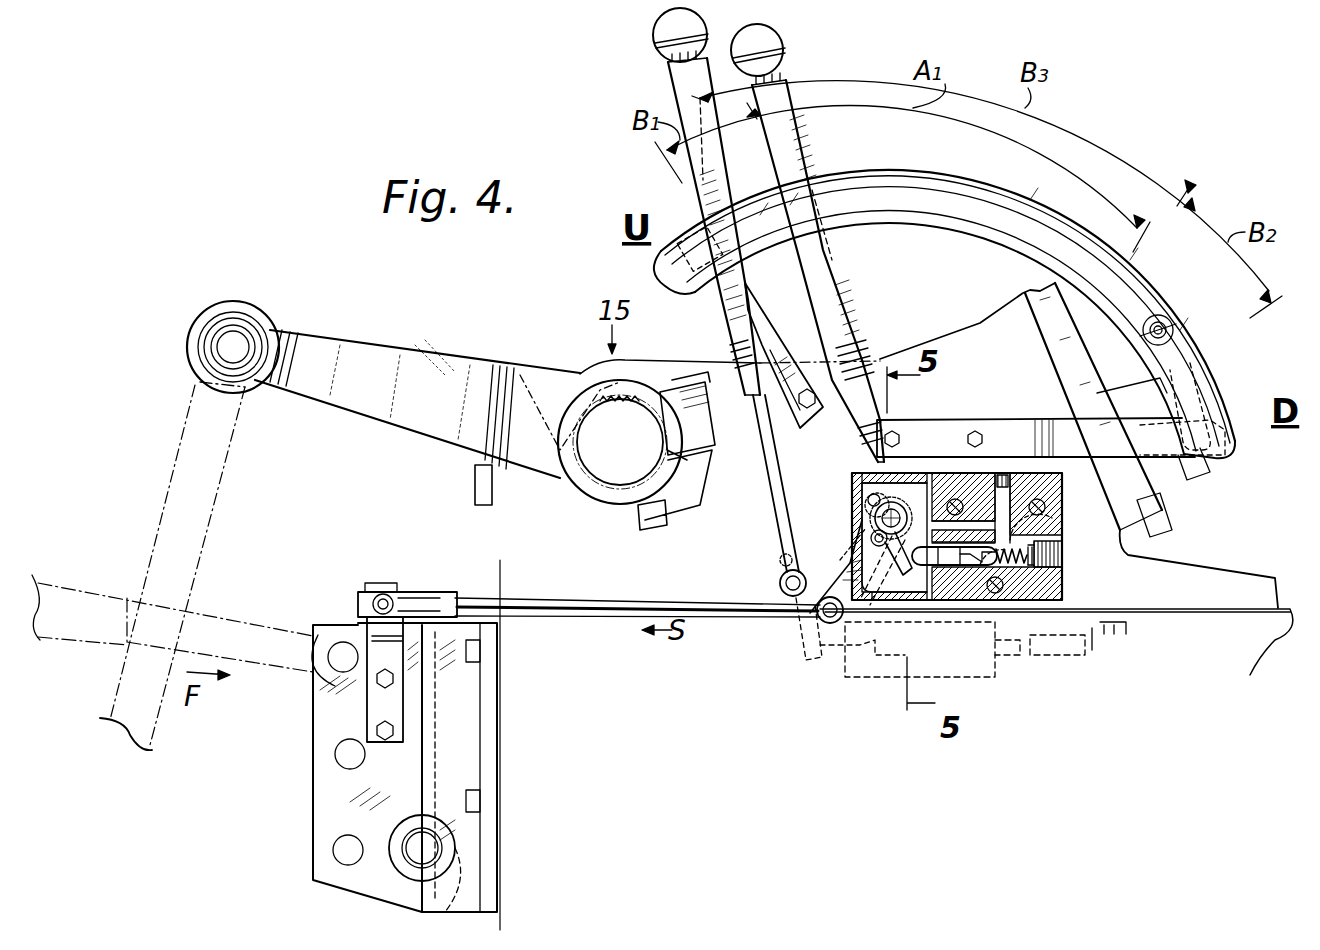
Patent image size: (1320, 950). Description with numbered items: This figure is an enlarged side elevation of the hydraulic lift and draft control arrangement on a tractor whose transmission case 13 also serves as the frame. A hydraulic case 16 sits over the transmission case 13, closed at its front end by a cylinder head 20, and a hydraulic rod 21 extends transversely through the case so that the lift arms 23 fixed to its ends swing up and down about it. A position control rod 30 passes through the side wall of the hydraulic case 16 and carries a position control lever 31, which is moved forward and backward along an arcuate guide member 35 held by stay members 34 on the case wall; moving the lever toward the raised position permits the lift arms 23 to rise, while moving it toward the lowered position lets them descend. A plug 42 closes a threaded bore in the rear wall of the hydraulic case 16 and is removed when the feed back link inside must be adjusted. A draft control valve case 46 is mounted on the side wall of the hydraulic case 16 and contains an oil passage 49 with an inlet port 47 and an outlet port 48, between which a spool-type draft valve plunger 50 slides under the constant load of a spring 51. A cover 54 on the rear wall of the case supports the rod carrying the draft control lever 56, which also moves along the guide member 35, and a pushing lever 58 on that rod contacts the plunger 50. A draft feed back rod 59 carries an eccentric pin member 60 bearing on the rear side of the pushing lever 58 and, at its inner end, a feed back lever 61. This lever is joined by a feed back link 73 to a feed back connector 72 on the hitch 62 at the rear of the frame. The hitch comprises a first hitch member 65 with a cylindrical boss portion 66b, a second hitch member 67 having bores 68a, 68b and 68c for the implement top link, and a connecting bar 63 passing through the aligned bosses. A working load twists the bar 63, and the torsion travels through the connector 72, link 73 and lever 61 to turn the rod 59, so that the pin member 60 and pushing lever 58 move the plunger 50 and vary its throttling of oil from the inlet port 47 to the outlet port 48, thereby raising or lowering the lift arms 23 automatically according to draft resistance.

The transmission case 13 is at (1253, 673).
The hydraulic case 16 is at (900, 358).
The cylinder head 20 is at (1128, 498).
The hydraulic rod 21 is at (600, 467).
The lift arms 23 is at (447, 355).
The position control rod 30 is at (781, 583).
The position control lever 31 is at (674, 78).
The stay members 34 is at (803, 420).
The arcuate guide member 35 is at (993, 240).
The plug 42 is at (474, 487).
The draft control valve case 46 is at (1063, 585).
The inlet port 47 is at (963, 583).
The outlet port 48 is at (1045, 520).
The oil passage 49 is at (1007, 597).
The draft valve plunger 50 is at (923, 565).
The spring 51 is at (1062, 560).
The cover 54 is at (851, 500).
The draft control lever 56 is at (833, 257).
The pushing lever 58 is at (889, 592).
The draft feed back rod 59 is at (880, 519).
The pin member 60 is at (873, 535).
The feed back lever 61 is at (817, 627).
The hitch 62 is at (390, 745).
The connecting bar 63 is at (412, 855).
The first hitch member 65 is at (470, 725).
The cylindrical boss portion 66b is at (457, 850).
The second hitch member 67 is at (313, 723).
The bore 68a is at (340, 647).
The bore 68b is at (338, 752).
The bore 68c is at (335, 848).
The feed back connector 72 is at (378, 588).
The feed back link 73 is at (600, 607).